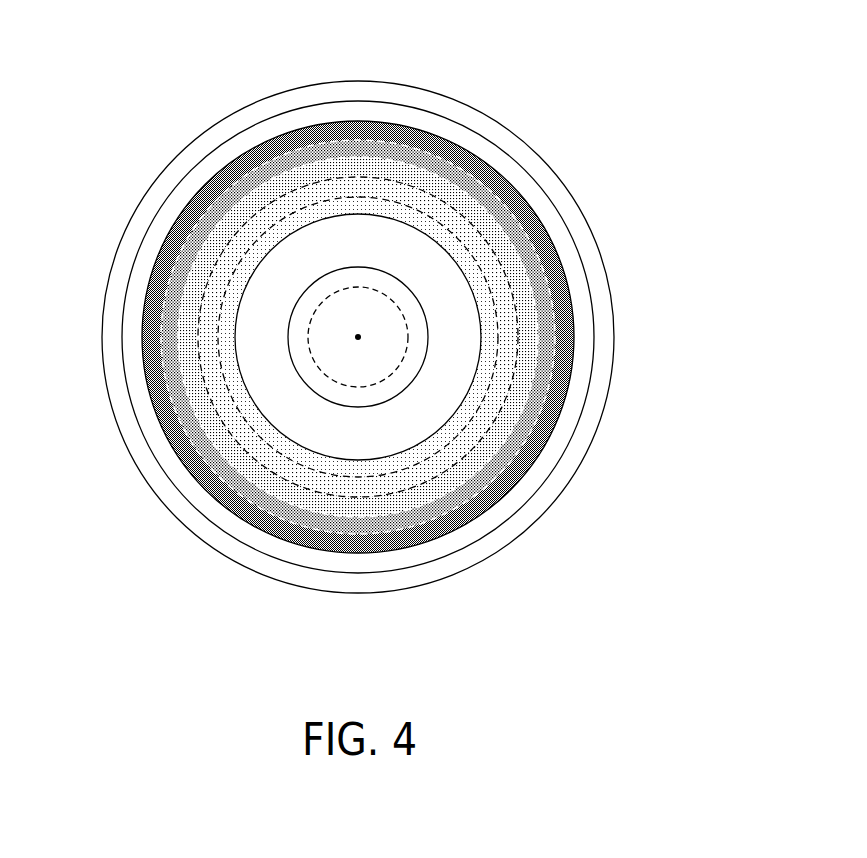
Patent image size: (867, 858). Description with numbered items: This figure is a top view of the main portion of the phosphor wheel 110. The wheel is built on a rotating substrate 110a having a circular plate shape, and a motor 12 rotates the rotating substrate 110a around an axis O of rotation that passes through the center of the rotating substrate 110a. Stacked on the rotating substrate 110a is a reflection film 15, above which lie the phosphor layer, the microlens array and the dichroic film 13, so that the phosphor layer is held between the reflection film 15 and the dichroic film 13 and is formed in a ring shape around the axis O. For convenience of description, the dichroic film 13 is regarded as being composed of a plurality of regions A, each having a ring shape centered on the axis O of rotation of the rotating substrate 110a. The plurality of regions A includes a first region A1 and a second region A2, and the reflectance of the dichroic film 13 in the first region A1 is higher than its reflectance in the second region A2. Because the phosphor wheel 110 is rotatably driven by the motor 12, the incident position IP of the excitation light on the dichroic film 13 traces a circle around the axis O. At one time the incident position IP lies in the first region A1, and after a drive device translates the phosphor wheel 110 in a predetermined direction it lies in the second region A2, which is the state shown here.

The phosphor wheel 110 is at (150, 120).
The rotating substrate 110a is at (595, 397).
The reflection film 15 is at (493, 157).
The dichroic film 13 is at (530, 210).
The motor 12 is at (410, 322).
The incident position IP is at (552, 357).
The axis of rotation O is at (358, 337).
The regions A is at (312, 387).
The first region A1 is at (267, 520).
The second region A2 is at (363, 517).